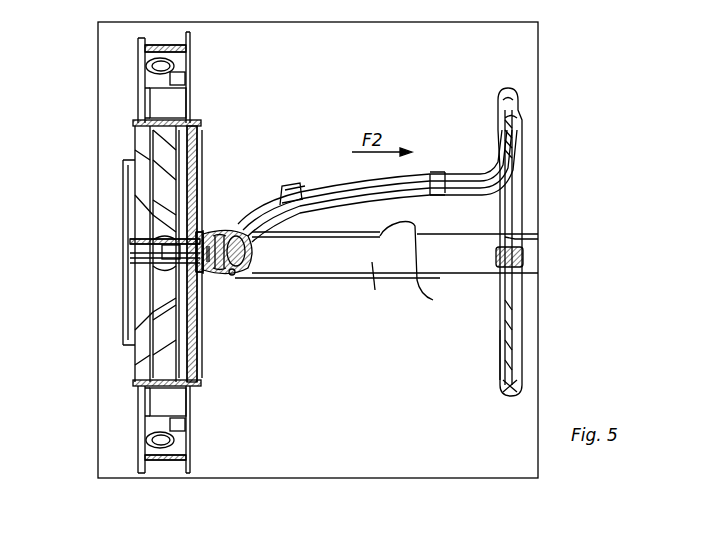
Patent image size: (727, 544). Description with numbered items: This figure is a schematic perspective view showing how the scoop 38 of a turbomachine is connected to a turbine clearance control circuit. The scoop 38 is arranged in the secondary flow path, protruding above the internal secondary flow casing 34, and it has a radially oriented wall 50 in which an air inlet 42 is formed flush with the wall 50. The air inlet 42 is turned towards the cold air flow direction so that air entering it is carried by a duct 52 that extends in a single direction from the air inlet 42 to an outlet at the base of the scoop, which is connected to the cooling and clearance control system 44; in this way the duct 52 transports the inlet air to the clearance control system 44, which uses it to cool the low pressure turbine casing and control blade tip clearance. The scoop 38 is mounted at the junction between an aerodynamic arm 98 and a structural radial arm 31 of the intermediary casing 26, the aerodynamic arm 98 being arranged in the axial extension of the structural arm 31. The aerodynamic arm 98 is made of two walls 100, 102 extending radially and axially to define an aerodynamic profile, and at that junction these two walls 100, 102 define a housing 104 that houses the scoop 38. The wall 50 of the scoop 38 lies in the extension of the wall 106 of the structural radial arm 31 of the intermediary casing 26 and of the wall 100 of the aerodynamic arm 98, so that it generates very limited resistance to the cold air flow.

The intermediary casing 26 is at (165, 462).
The structural radial arm 31 is at (152, 256).
The wall of the structural radial arm 106 is at (152, 232).
The air inlet 42 is at (205, 242).
The wall of the scoop 50 is at (228, 236).
The duct 52 is at (220, 237).
The scoop 38 is at (208, 265).
The housing 104 is at (230, 276).
The clearance control system 44 is at (475, 175).
The wall of the aerodynamic arm 102 is at (352, 280).
The wall of the aerodynamic arm 100 is at (422, 268).
The aerodynamic arm 98 is at (373, 255).
The internal secondary flow casing 34 is at (454, 355).